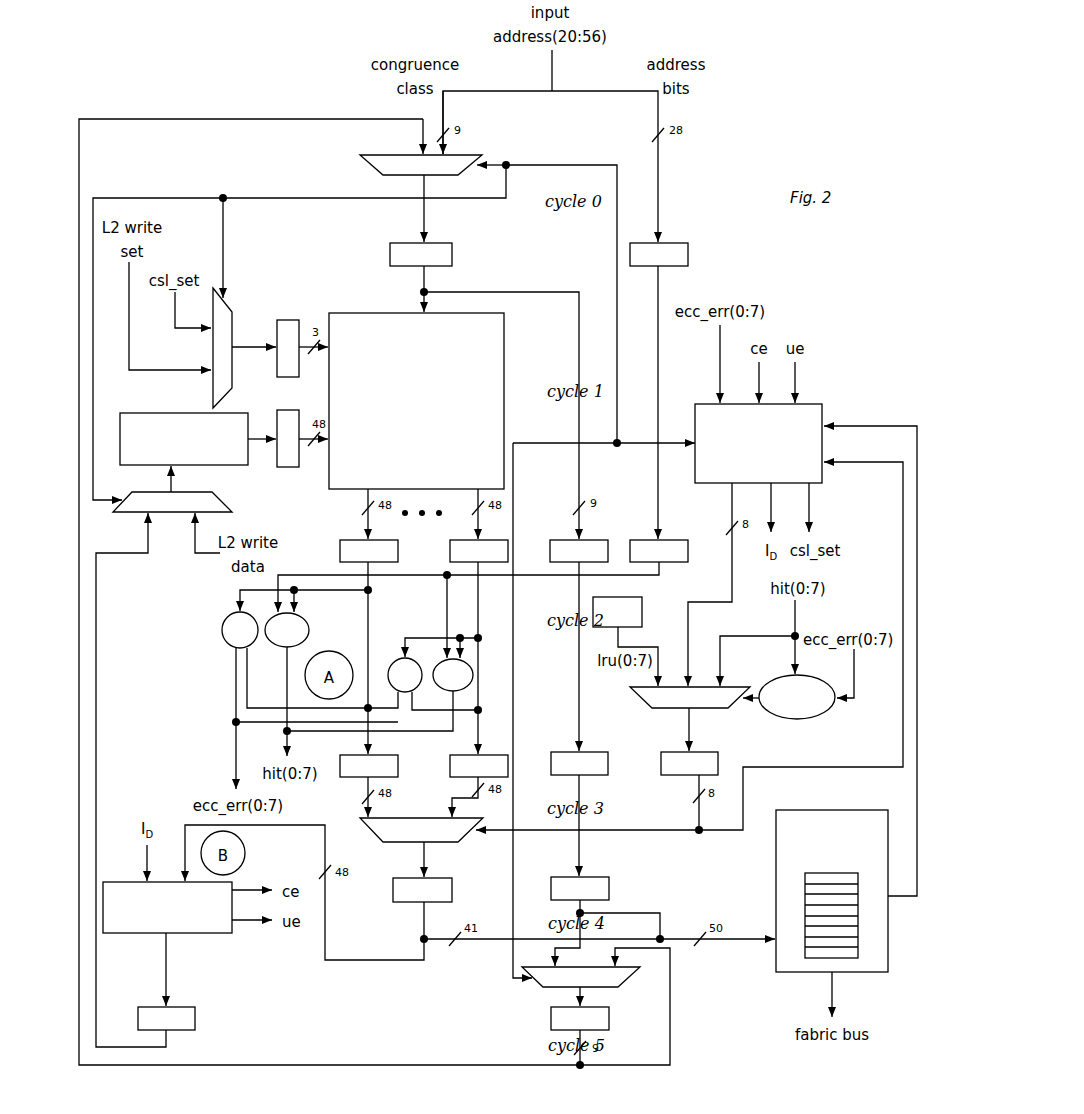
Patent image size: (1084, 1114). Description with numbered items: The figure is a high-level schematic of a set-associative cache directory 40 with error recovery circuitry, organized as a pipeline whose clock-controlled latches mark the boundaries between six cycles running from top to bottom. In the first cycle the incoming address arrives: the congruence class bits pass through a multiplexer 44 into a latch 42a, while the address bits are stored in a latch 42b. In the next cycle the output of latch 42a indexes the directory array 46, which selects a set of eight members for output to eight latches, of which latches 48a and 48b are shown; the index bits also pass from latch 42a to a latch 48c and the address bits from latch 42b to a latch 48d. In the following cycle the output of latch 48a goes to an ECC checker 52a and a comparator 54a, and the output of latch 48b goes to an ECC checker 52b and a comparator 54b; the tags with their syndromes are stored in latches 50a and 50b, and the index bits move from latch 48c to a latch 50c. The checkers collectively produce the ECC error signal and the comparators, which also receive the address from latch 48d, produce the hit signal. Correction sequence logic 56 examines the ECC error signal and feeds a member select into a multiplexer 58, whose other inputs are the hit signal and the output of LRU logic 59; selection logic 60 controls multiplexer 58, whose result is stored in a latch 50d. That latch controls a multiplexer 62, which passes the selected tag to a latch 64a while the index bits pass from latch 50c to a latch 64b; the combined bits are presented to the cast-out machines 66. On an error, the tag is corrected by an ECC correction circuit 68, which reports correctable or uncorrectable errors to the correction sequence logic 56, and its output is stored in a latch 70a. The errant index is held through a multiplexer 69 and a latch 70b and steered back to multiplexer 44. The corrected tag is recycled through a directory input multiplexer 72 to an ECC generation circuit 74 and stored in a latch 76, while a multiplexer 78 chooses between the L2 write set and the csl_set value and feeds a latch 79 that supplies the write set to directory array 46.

The cache directory 40 is at (759, 116).
The latch 42a is at (390, 262).
The latch 42b is at (688, 260).
The congruence class multiplexer 44 is at (378, 170).
The directory array 46 is at (350, 312).
The latch 48a is at (340, 553).
The latch 48b is at (450, 555).
The latch 48c is at (592, 540).
The latch 48d is at (688, 557).
The latch 50a is at (340, 778).
The latch 50b is at (450, 770).
The latch 50c is at (593, 752).
The latch 50d is at (661, 762).
The ECC checker 52a is at (222, 628).
The ECC checker 52b is at (392, 661).
The comparator 54a is at (309, 631).
The comparator 54b is at (473, 682).
The correction sequence logic 56 is at (825, 407).
The multiplexer 58 is at (742, 686).
The LRU logic 59 is at (642, 620).
The selection logic 60 is at (800, 718).
The multiplexer 62 is at (440, 843).
The latch 64a is at (393, 893).
The latch 64b is at (609, 889).
The cast-out machines 66 is at (870, 975).
The ECC correction circuit 68 is at (178, 934).
The multiplexer 69 is at (553, 990).
The latch 70a is at (197, 1025).
The latch 70b is at (609, 1023).
The directory input multiplexer 72 is at (173, 515).
The ECC generation circuit 74 is at (147, 413).
The latch 76 is at (293, 468).
The multiplexer 78 is at (233, 312).
The latch 79 is at (288, 377).